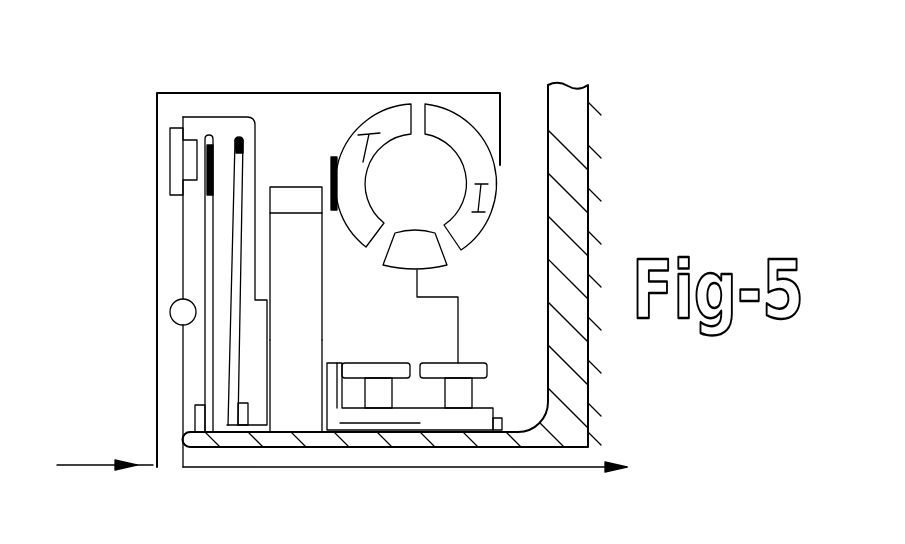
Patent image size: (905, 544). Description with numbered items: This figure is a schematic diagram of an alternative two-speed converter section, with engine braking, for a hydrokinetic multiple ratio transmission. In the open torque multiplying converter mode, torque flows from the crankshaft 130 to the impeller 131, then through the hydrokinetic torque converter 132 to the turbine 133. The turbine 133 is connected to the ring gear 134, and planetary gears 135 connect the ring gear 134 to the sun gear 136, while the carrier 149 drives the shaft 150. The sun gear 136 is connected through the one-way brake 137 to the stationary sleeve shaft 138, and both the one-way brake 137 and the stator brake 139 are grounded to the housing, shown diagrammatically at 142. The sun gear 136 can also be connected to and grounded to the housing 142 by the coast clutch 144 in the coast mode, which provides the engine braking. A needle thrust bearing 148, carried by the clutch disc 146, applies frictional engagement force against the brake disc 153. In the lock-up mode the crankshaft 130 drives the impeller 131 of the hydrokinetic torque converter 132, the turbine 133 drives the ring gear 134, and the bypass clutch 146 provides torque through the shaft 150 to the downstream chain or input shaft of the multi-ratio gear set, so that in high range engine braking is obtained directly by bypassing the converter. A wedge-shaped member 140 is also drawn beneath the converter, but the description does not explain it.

The crankshaft 130 is at (103, 430).
The impeller 131 is at (477, 232).
The hydrokinetic torque converter 132 is at (432, 190).
The turbine 133 is at (400, 117).
The ring gear 134 is at (285, 197).
The planetary gears 135 is at (295, 291).
The sun gear 136 is at (285, 407).
The one-way brake 137 is at (392, 332).
The stationary sleeve shaft 138 is at (421, 420).
The stator brake 139 is at (472, 362).
The wedge member 140 is at (427, 258).
The housing 142 is at (578, 222).
The coast clutch 144 is at (318, 88).
The clutch disc 146 is at (193, 168).
The needle thrust bearing 148 is at (205, 163).
The carrier 149 is at (215, 112).
The shaft 150 is at (512, 470).
The brake disc 153 is at (291, 245).